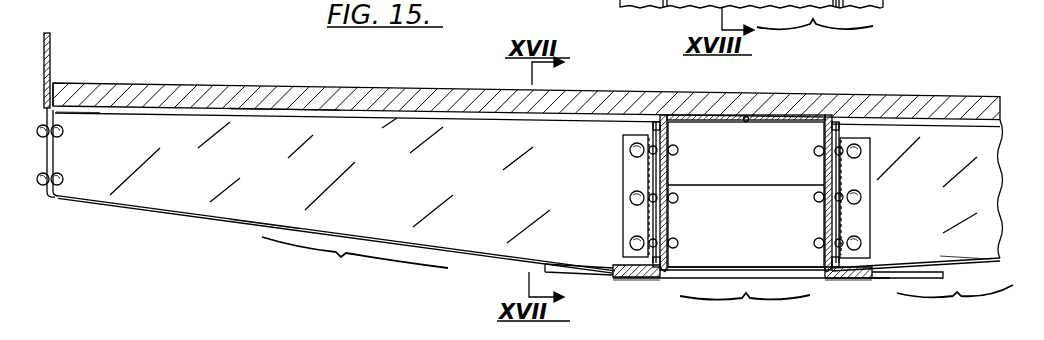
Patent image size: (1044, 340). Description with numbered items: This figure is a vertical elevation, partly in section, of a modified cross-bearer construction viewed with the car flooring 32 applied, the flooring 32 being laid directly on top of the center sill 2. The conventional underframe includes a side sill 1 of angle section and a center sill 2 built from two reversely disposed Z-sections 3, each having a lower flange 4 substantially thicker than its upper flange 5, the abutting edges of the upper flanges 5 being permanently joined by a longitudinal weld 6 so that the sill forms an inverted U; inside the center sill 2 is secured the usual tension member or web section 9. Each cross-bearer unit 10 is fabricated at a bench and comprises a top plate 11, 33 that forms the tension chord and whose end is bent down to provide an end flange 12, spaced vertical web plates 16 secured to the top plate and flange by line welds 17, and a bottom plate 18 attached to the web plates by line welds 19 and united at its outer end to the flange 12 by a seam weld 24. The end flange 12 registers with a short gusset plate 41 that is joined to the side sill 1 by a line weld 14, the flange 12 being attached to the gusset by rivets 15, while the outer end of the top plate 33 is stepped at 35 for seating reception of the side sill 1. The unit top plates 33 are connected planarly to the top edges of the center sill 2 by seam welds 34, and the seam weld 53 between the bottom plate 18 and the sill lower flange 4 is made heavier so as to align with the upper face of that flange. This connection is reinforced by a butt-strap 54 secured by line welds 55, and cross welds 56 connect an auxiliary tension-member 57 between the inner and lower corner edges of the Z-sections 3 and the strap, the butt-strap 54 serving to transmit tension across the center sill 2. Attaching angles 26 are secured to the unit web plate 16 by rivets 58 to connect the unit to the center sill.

The side sill 1 is at (51, 54).
The center sill 2 is at (776, 173).
The Z-section 3 is at (640, 134).
The lower flange 4 is at (627, 278).
The upper flange 5 is at (706, 122).
The longitudinal weld 6 is at (746, 122).
The web section 9 is at (750, 194).
The unit 10 is at (637, 282).
The top plate 11 is at (55, 146).
The end flange 12 is at (62, 159).
The line weld 14 is at (50, 110).
The rivets 15 is at (40, 136).
The web plate 16 is at (543, 180).
The line weld 17 is at (378, 117).
The bottom plate 18 is at (203, 221).
The line weld 19 is at (282, 222).
The seam weld 24 is at (47, 197).
The attaching angle 26 is at (622, 152).
The flooring 32 is at (407, 97).
The top plate 33 is at (285, 113).
The seam weld 34 is at (663, 115).
The step 35 is at (97, 108).
The gusset plate 41 is at (44, 188).
The seam weld 53 is at (599, 264).
The butt-strap 54 is at (700, 277).
The line weld 55 is at (583, 275).
The cross weld 56 is at (666, 279).
The auxiliary tension-member 57 is at (733, 277).
The rivets 58 is at (630, 194).